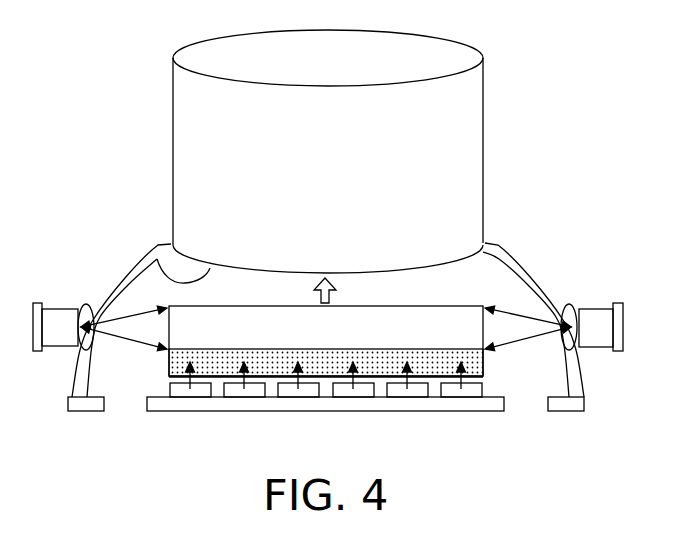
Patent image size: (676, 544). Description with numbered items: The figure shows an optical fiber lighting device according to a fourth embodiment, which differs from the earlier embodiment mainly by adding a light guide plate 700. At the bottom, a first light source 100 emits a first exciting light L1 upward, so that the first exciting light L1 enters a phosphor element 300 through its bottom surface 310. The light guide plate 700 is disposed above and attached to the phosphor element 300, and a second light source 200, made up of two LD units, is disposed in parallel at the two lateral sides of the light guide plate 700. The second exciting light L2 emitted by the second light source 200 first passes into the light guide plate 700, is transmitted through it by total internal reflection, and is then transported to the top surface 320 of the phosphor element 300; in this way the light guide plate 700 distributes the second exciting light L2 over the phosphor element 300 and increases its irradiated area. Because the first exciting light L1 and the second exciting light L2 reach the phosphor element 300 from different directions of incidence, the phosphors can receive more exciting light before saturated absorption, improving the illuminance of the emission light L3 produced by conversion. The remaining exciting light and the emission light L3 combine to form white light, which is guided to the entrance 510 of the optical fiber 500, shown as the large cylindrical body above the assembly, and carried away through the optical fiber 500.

The first light source 100 is at (181, 391).
The second light source 200 is at (57, 338).
The phosphor element 300 is at (325, 363).
The bottom surface 310 is at (435, 377).
The top surface 320 is at (284, 354).
The optical fiber 500 is at (460, 147).
The entrance 510 is at (160, 275).
The light guide plate 700 is at (437, 332).
The first exciting light L1 is at (355, 378).
The second exciting light L2 is at (130, 342).
The emission light L3 is at (341, 293).